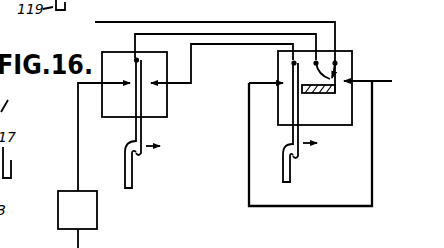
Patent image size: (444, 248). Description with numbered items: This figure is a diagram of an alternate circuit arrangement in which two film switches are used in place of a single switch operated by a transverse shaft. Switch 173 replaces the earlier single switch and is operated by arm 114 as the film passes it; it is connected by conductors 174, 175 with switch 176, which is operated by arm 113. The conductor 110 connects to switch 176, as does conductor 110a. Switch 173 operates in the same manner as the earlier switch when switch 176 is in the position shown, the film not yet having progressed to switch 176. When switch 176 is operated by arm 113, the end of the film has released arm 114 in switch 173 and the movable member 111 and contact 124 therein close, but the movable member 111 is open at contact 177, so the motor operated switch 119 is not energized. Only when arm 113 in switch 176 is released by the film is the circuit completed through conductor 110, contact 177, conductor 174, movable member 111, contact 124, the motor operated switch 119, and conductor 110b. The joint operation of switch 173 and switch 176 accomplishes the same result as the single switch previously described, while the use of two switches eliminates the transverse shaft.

The conductor 110 is at (214, 22).
The conductor 110a is at (369, 72).
The conductor 110b is at (310, 164).
The movable member 111 is at (135, 131).
The arm 113 is at (291, 175).
The arm 114 is at (132, 176).
The motor operated switch 119 is at (94, 165).
The contact 124 is at (124, 88).
The switch 173 is at (162, 103).
The conductor 174 is at (142, 34).
The conductor 175 is at (217, 45).
The switch 176 is at (347, 50).
The contact 177 is at (328, 58).